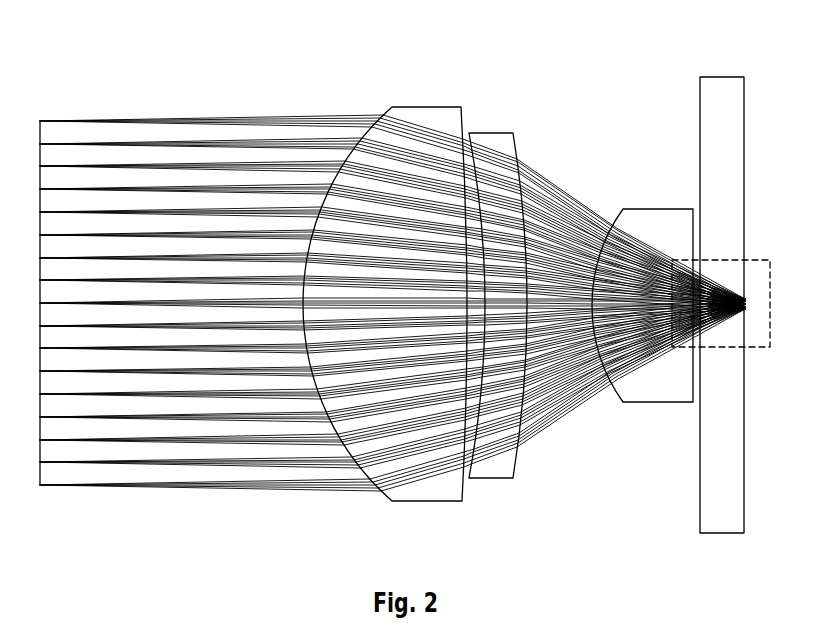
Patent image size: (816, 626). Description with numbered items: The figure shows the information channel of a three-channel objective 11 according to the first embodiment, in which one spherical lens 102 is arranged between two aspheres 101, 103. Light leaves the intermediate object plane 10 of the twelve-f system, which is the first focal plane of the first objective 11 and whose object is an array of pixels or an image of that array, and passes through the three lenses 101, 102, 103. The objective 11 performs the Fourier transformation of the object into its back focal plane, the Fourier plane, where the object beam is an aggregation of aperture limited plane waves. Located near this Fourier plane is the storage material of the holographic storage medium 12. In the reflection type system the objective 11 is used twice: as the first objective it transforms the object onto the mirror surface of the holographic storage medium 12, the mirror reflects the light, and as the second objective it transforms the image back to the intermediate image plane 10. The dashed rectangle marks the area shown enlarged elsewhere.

The intermediate object plane 10 is at (40, 116).
The three-channel objective 11 is at (498, 290).
The holographic storage medium 12 is at (696, 106).
The asphere 101 is at (431, 508).
The spherical lens 102 is at (491, 485).
The asphere 103 is at (663, 408).